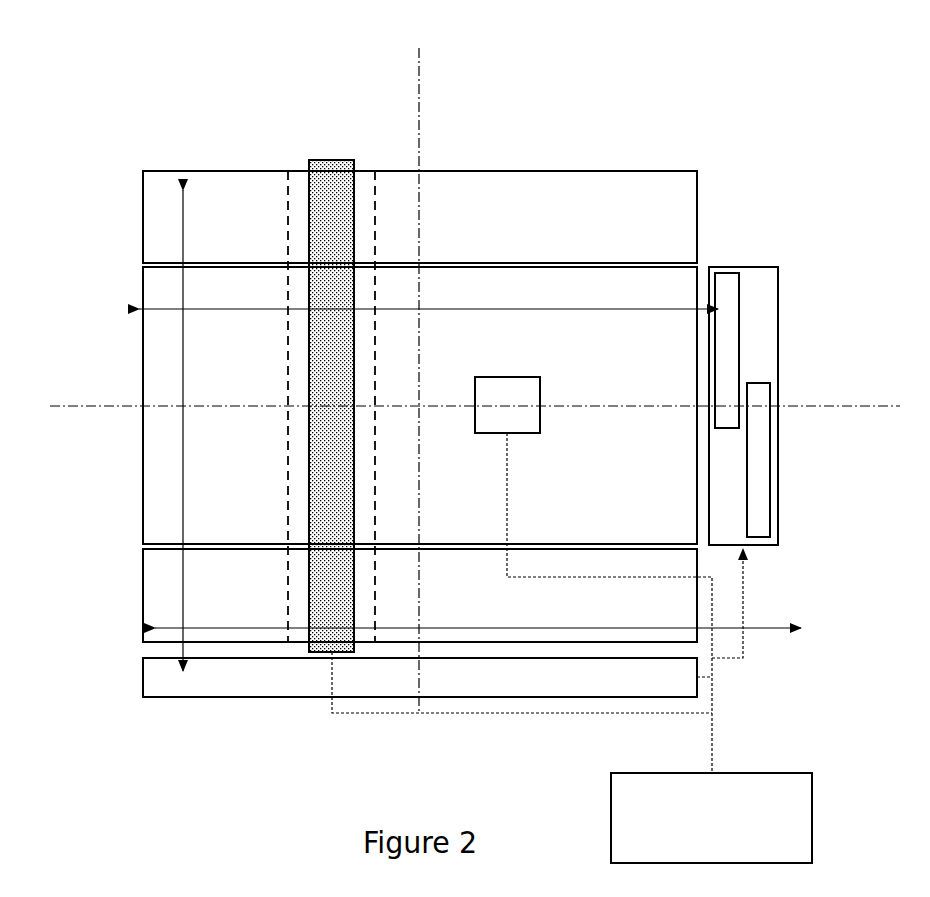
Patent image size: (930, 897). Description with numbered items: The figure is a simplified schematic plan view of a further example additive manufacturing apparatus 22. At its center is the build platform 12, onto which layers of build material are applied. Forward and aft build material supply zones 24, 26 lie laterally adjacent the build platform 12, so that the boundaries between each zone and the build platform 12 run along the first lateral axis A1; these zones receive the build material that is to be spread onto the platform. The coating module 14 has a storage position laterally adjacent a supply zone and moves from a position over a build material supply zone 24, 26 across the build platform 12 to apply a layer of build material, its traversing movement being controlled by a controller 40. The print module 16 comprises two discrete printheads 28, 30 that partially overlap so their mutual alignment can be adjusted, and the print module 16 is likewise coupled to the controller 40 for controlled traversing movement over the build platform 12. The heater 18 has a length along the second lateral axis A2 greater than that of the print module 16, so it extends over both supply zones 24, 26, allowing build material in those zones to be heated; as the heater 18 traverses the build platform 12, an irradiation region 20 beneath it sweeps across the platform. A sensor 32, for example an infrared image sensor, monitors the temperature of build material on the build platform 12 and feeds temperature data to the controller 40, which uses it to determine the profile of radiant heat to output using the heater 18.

The additive manufacturing apparatus 22 is at (153, 26).
The aft build material supply zone 26 is at (237, 183).
The build platform 12 is at (171, 273).
The forward build material supply zone 24 is at (148, 580).
The coating module 14 is at (236, 672).
The irradiation region 20 is at (303, 178).
The heater 18 is at (337, 161).
The second lateral axis A2 is at (419, 96).
The first lateral axis A1 is at (106, 405).
The print module 16 is at (778, 534).
The printhead 28 is at (730, 297).
The printhead 30 is at (762, 458).
The sensor 32 is at (507, 405).
The controller 40 is at (618, 841).